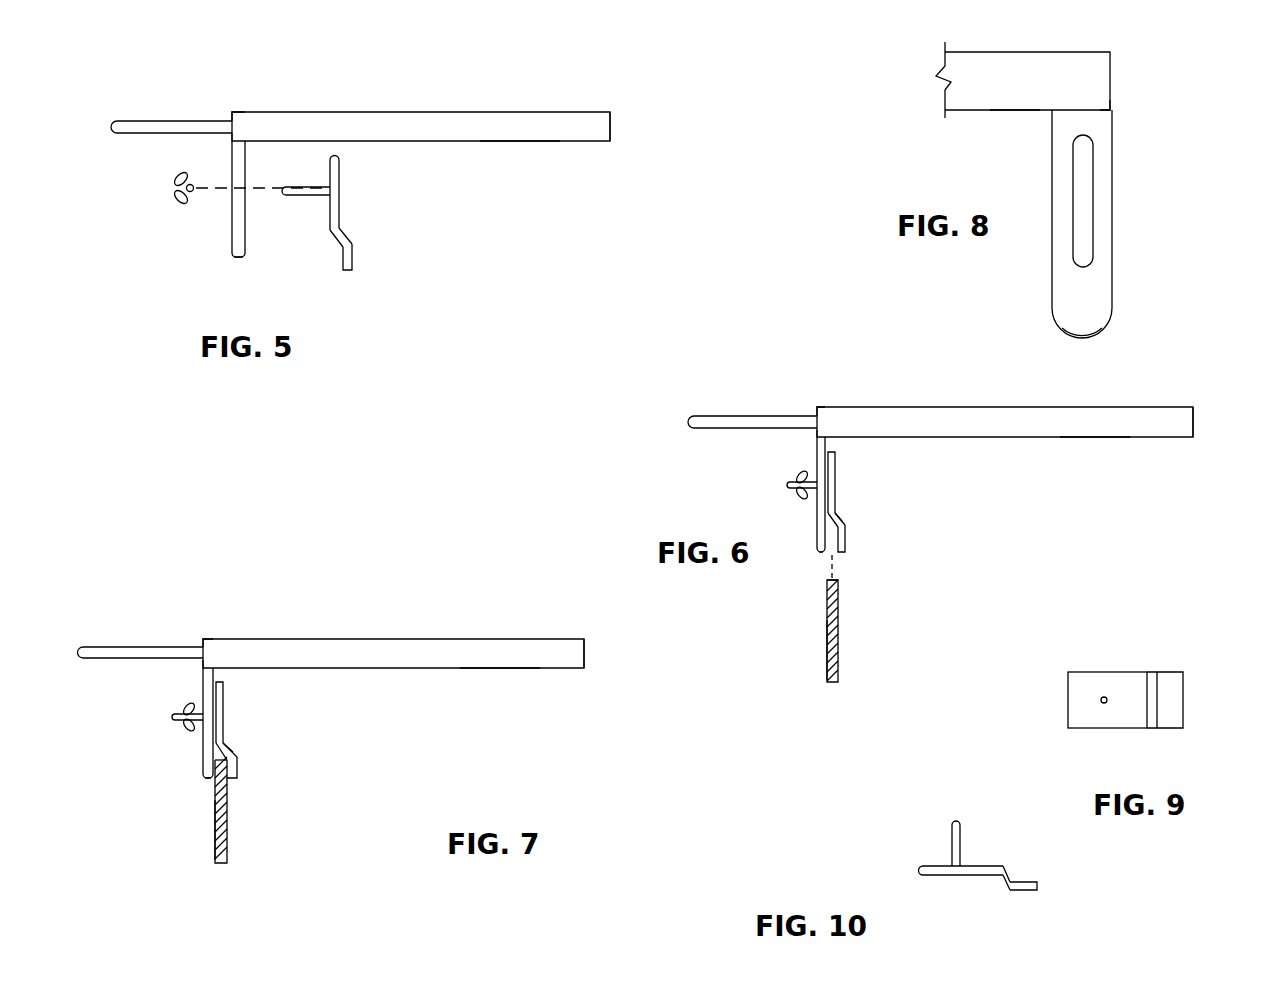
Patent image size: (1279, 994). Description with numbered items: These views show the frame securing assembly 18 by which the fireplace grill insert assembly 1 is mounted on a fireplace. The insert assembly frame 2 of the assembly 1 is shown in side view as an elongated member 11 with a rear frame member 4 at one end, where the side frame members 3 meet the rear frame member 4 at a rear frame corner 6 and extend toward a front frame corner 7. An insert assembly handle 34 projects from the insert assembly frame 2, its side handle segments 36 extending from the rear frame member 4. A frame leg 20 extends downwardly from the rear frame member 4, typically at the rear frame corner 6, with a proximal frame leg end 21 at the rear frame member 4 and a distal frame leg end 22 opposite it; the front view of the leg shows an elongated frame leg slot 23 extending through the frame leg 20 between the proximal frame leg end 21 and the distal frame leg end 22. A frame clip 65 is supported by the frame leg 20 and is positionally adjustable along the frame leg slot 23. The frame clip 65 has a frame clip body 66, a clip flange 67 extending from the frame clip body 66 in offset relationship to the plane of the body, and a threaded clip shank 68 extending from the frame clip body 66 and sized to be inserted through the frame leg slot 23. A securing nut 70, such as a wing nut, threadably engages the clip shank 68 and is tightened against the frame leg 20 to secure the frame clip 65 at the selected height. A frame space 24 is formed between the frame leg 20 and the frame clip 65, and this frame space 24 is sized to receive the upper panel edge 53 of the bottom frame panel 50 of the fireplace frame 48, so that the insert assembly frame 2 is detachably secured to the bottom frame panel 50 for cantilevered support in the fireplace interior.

In FIG. 5, the assembly 1 is at (151, 94).
In FIG. 7, the assembly 1 is at (130, 615).
In FIG. 6, the assembly 1 is at (744, 366).
In FIG. 5, the insert assembly frame 2 is at (422, 128).
In FIG. 7, the insert assembly frame 2 is at (394, 648).
In FIG. 6, the insert assembly frame 2 is at (1005, 414).
In FIG. 8, the insert assembly frame 2 is at (1061, 88).
In FIG. 5, the side frame members 3 is at (517, 146).
In FIG. 7, the side frame members 3 is at (493, 672).
In FIG. 6, the side frame members 3 is at (1090, 442).
In FIG. 8, the rear frame member 4 is at (1020, 116).
In FIG. 5, the rear frame corners 6 is at (236, 132).
In FIG. 7, the rear frame corners 6 is at (208, 640).
In FIG. 6, the rear frame corners 6 is at (820, 411).
In FIG. 5, the front frame corners 7 is at (606, 118).
In FIG. 7, the front frame corners 7 is at (580, 652).
In FIG. 6, the front frame corners 7 is at (1190, 425).
In FIG. 5, the table top panel 11 is at (567, 130).
In FIG. 7, the table top panel 11 is at (540, 657).
In FIG. 6, the table top panel 11 is at (1125, 425).
In FIG. 8, the table top panel 11 is at (1010, 70).
In FIG. 5, the frame securing assembly 18 is at (374, 247).
In FIG. 7, the frame securing assembly 18 is at (287, 751).
In FIG. 6, the frame securing assembly 18 is at (888, 548).
In FIG. 8, the frame securing assembly 18 is at (1132, 225).
In FIG. 5, the frame leg 20 is at (229, 210).
In FIG. 7, the frame leg 20 is at (200, 742).
In FIG. 6, the frame leg 20 is at (815, 522).
In FIG. 8, the frame leg 20 is at (1118, 215).
In FIG. 5, the proximal frame leg end 21 is at (232, 134).
In FIG. 7, the proximal frame leg end 21 is at (203, 670).
In FIG. 6, the proximal frame leg end 21 is at (817, 438).
In FIG. 8, the proximal frame leg end 21 is at (1110, 108).
In FIG. 5, the distal frame leg end 22 is at (242, 258).
In FIG. 7, the distal frame leg end 22 is at (206, 786).
In FIG. 6, the distal frame leg end 22 is at (822, 560).
In FIG. 8, the distal frame leg end 22 is at (1090, 340).
In FIG. 8, the frame leg slot 23 is at (1086, 245).
In FIG. 7, the frame space 24 is at (236, 757).
In FIG. 6, the frame space 24 is at (843, 516).
In FIG. 5, the insert assembly handle 34 is at (94, 108).
In FIG. 7, the insert assembly handle 34 is at (82, 628).
In FIG. 6, the insert assembly handle 34 is at (716, 409).
In FIG. 5, the side handle segments 36 is at (151, 108).
In FIG. 7, the side handle segments 36 is at (130, 628).
In FIG. 6, the side handle segments 36 is at (744, 396).
In FIG. 7, the fireplace frame 48 is at (232, 838).
In FIG. 6, the fireplace frame 48 is at (816, 624).
In FIG. 7, the bottom frame panel 50 is at (210, 818).
In FIG. 6, the bottom frame panel 50 is at (818, 662).
In FIG. 7, the upper panel edge 53 is at (228, 752).
In FIG. 6, the upper panel edge 53 is at (842, 582).
In FIG. 5, the frame clip 65 is at (358, 268).
In FIG. 7, the frame clip 65 is at (240, 768).
In FIG. 6, the frame clip 65 is at (848, 545).
In FIG. 9, the frame clip 65 is at (1102, 663).
In FIG. 10, the frame clip 65 is at (990, 861).
In FIG. 5, the frame clip body 66 is at (341, 170).
In FIG. 7, the frame clip body 66 is at (226, 688).
In FIG. 6, the frame clip body 66 is at (838, 460).
In FIG. 9, the frame clip body 66 is at (1068, 710).
In FIG. 10, the frame clip body 66 is at (950, 877).
In FIG. 5, the clip flange 67 is at (342, 252).
In FIG. 7, the clip flange 67 is at (232, 785).
In FIG. 6, the clip flange 67 is at (840, 560).
In FIG. 9, the clip flange 67 is at (1170, 685).
In FIG. 10, the clip flange 67 is at (1040, 885).
In FIG. 5, the clip shank 68 is at (312, 197).
In FIG. 7, the clip shank 68 is at (172, 716).
In FIG. 6, the clip shank 68 is at (792, 484).
In FIG. 9, the clip shank 68 is at (1100, 698).
In FIG. 10, the clip shank 68 is at (950, 835).
In FIG. 5, the securing nut 70 is at (178, 196).
In FIG. 7, the securing nut 70 is at (190, 725).
In FIG. 6, the securing nut 70 is at (800, 494).